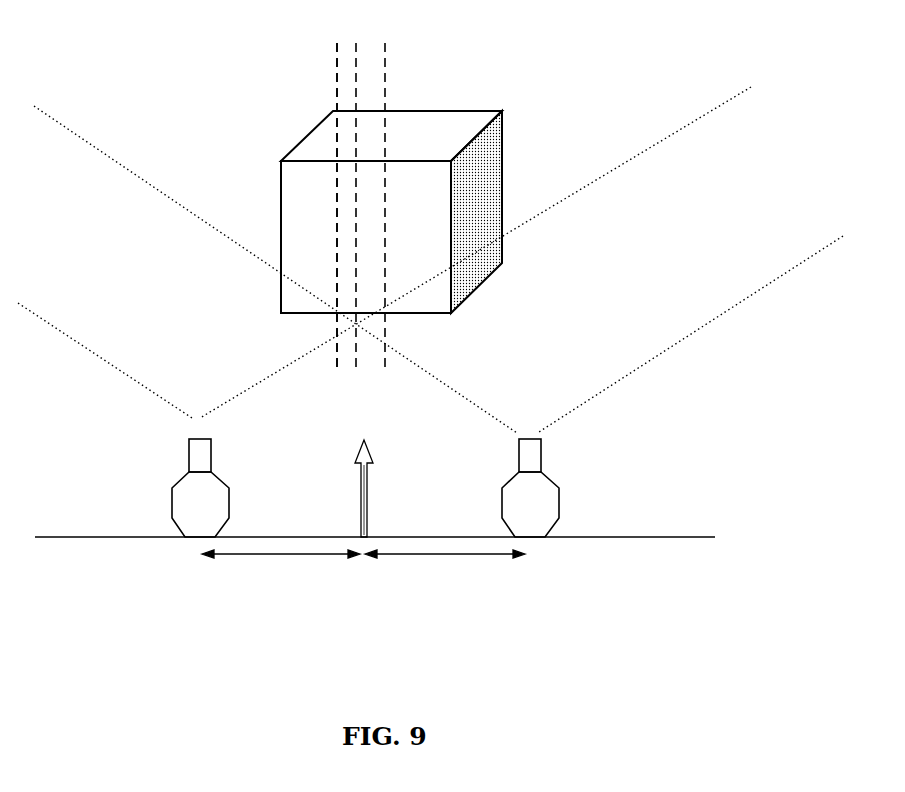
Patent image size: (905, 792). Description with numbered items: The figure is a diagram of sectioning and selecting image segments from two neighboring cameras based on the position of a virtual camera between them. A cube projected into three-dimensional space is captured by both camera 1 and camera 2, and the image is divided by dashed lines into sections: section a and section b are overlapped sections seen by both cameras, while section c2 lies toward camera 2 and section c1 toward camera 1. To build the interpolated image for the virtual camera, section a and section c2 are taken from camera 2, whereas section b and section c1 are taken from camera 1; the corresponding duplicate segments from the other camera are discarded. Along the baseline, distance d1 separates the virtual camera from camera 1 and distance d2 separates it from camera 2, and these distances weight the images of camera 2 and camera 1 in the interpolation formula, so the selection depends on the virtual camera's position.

The camera 1 is at (543, 588).
The camera 2 is at (193, 590).
The section a is at (343, 197).
The section b is at (366, 197).
The section c1 is at (410, 197).
The section c2 is at (300, 197).
The distance d1 is at (445, 567).
The distance d2 is at (281, 567).